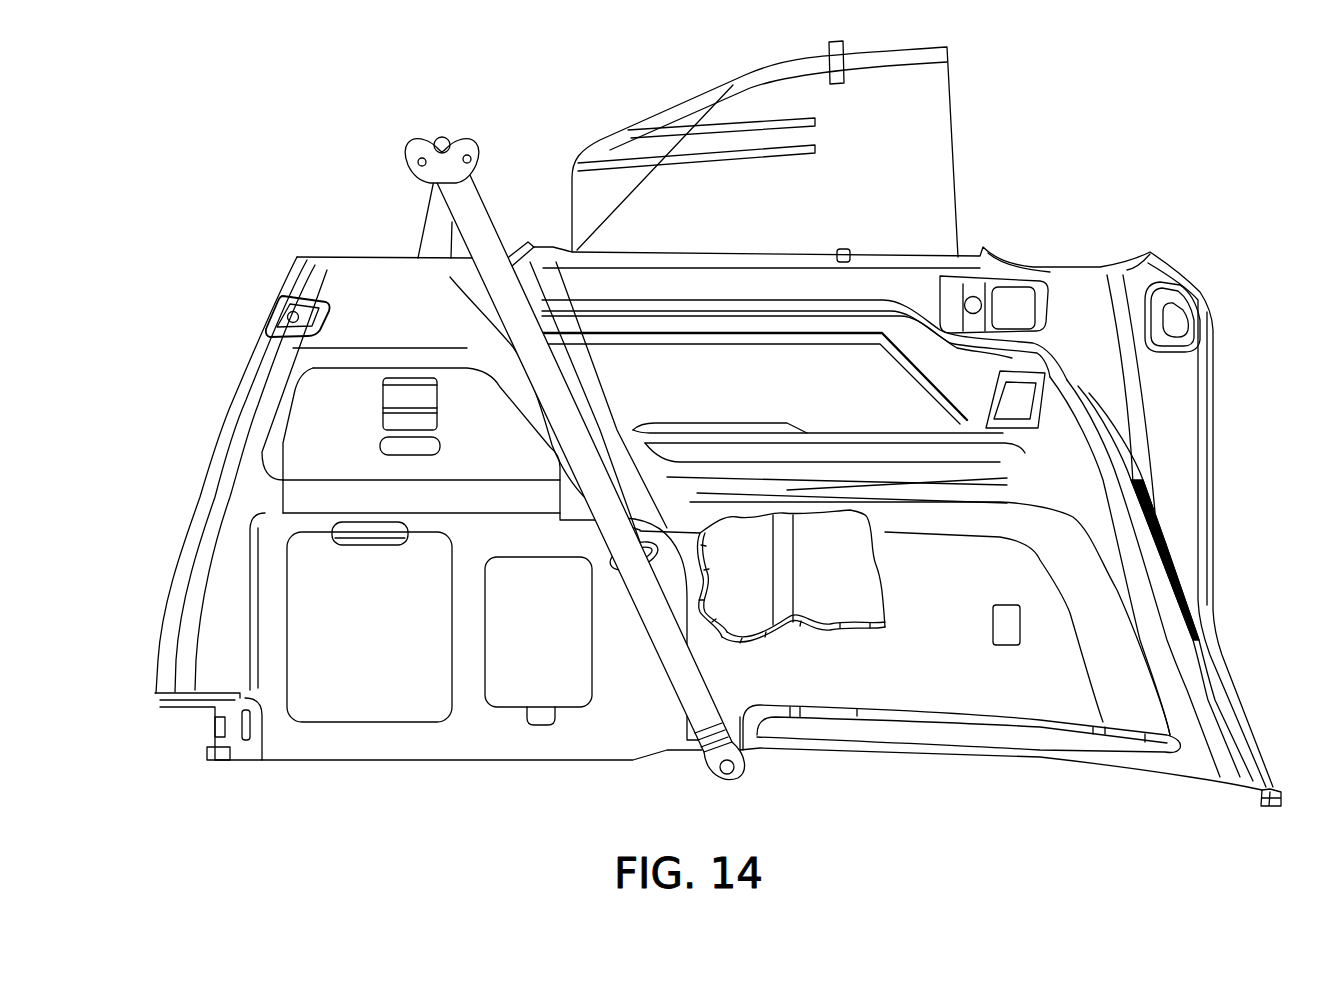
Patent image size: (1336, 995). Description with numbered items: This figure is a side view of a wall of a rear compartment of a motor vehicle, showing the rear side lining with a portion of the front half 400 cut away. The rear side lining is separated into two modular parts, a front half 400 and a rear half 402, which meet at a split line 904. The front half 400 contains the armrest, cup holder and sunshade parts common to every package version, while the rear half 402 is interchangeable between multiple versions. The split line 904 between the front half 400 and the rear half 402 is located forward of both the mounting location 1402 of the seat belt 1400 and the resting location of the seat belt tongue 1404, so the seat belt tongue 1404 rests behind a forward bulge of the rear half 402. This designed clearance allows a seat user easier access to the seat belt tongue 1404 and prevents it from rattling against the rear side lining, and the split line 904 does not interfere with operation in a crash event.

The front half 400 is at (1180, 393).
The rear half 402 is at (205, 488).
The split line 904 is at (612, 445).
The seat belt 1400 is at (508, 283).
The mounting location 1402 is at (412, 145).
The seat belt tongue 1404 is at (788, 565).